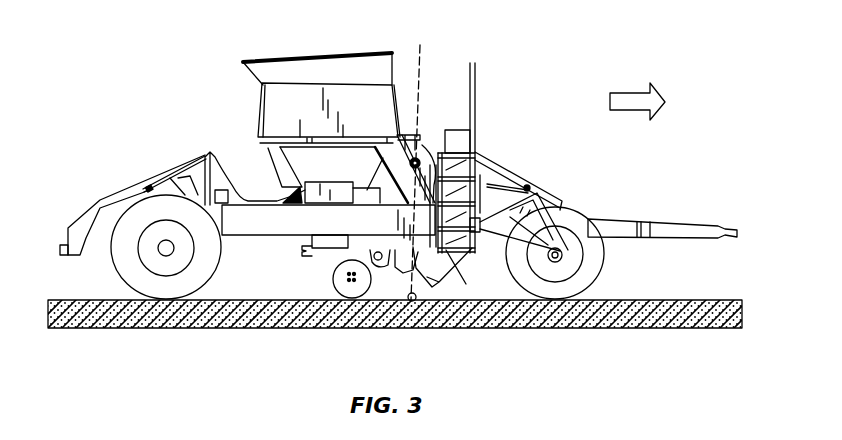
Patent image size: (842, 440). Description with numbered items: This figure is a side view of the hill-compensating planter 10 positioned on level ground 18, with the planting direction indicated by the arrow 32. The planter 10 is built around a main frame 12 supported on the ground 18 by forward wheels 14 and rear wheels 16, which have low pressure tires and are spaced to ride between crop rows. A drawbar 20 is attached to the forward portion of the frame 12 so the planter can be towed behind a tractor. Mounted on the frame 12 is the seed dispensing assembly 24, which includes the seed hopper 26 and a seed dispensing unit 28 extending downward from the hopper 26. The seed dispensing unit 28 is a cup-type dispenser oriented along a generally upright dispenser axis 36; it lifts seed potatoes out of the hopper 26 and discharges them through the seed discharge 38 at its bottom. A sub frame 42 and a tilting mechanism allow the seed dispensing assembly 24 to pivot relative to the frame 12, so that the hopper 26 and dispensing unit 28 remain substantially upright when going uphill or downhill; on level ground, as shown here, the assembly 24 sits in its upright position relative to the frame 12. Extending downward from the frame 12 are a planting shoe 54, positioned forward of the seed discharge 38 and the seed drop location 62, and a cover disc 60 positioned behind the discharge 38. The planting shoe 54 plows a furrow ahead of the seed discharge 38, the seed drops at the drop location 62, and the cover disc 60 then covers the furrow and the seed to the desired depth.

The hill-compensating planter 10 is at (190, 36).
The main frame 12 is at (252, 235).
The forward wheels 14 is at (575, 213).
The rear wheels 16 is at (147, 212).
The ground 18 is at (655, 300).
The drawbar 20 is at (678, 220).
The seed dispensing assembly 24 is at (432, 116).
The seed hopper 26 is at (275, 93).
The seed dispensing unit 28 is at (427, 147).
The arrow 32 is at (627, 90).
The dispenser axis 36 is at (419, 64).
The seed discharge 38 is at (394, 278).
The sub frame 42 is at (272, 147).
The planting shoe 54 is at (438, 292).
The cover disc 60 is at (334, 279).
The seed drop location 62 is at (414, 302).